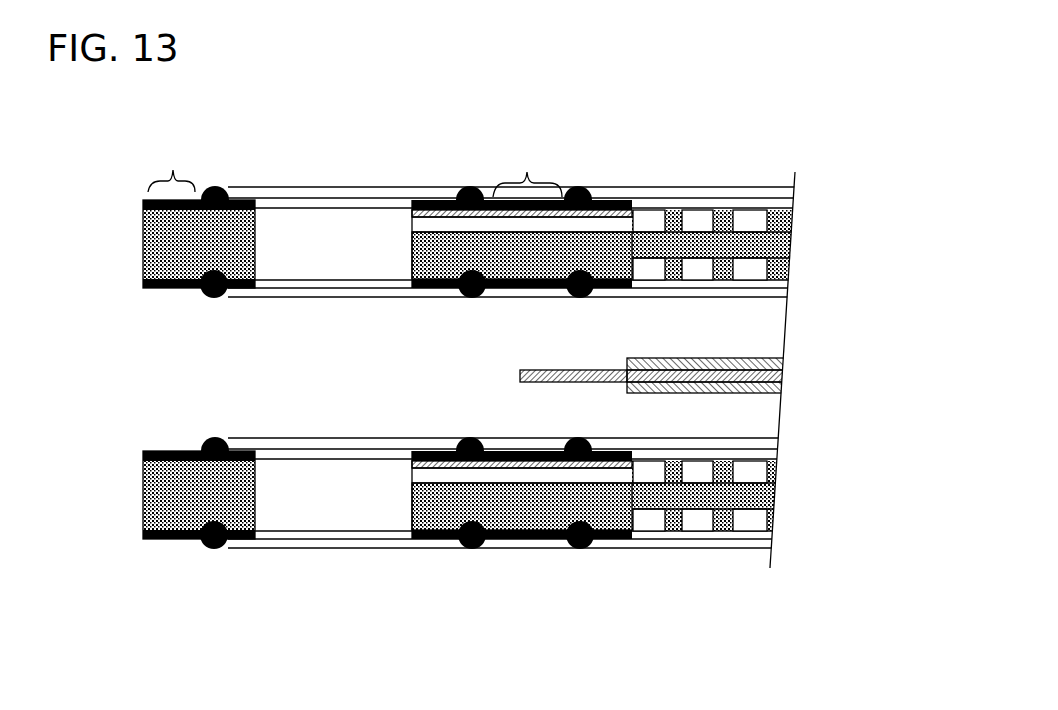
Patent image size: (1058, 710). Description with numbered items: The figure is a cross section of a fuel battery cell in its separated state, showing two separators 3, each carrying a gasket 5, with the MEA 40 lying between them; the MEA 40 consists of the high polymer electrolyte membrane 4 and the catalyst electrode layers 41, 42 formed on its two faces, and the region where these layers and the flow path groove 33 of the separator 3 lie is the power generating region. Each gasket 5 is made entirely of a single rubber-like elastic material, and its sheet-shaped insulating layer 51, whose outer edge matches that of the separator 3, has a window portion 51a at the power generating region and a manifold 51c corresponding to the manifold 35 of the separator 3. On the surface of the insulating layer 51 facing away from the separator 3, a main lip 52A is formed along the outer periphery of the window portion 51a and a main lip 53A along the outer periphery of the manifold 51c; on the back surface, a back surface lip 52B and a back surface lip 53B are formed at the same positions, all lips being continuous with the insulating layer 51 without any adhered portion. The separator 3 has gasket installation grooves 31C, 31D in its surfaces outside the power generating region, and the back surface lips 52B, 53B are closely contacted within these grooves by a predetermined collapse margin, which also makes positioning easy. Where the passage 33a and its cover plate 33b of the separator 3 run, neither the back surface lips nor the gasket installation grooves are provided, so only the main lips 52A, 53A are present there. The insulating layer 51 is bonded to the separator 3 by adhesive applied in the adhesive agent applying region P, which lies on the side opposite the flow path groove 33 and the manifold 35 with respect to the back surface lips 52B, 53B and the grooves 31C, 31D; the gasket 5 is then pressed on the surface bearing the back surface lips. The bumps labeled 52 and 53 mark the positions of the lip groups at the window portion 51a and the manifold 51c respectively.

The separator 3 is at (128, 248).
The high polymer electrolyte membrane 4 is at (786, 370).
The gasket 5 is at (133, 178).
The adhesive agent applying region P is at (355, 169).
The gasket installation groove 31C is at (635, 279).
The gasket installation groove 31D is at (255, 265).
The flow path groove 33 is at (752, 268).
The passage 33a is at (475, 222).
The cover plate 33b is at (414, 216).
The manifold 35 is at (355, 262).
The MEA 40 is at (804, 378).
The catalyst electrode layer 41 is at (712, 358).
The catalyst electrode layer 42 is at (720, 393).
The insulating layer 51 is at (497, 295).
The window portion 51a is at (645, 204).
The manifold 51c is at (332, 198).
The upper bump 52 is at (582, 193).
The main lip 52A is at (578, 298).
The back surface lip 52B is at (657, 256).
The upper terminal 53 is at (217, 190).
The main lip 53A is at (214, 298).
The back surface lip 53B is at (141, 226).